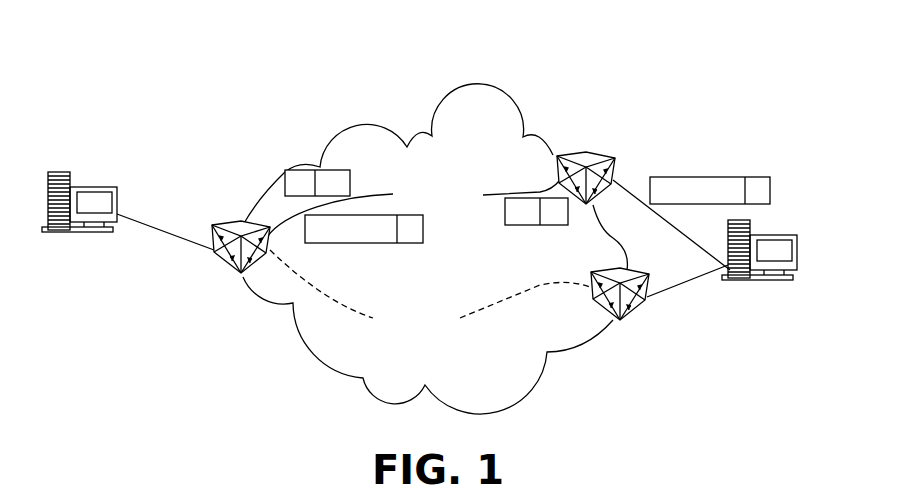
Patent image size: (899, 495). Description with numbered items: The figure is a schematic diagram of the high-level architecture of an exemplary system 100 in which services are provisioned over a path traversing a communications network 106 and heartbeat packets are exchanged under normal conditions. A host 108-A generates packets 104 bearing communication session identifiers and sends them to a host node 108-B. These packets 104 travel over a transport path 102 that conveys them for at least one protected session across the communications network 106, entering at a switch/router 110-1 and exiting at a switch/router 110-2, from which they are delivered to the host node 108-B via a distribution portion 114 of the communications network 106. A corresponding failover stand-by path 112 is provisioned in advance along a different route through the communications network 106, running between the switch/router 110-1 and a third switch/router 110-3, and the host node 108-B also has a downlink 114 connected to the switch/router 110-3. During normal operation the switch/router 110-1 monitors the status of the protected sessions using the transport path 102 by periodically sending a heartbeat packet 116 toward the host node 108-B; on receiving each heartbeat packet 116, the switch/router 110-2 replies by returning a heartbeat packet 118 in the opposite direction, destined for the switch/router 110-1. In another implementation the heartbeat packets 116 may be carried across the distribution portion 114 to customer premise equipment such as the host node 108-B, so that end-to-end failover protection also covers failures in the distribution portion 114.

The system 100 is at (672, 128).
The transport path 102 is at (533, 193).
The packets 104 is at (375, 233).
The communications network 106 is at (472, 105).
The host 108-A is at (90, 197).
The host node 108-B is at (782, 243).
The switch/router 110-1 is at (238, 223).
The switch/router 110-2 is at (597, 155).
The switch/router 110-3 is at (627, 322).
The failover stand-by path 112 is at (505, 305).
The distribution portion 114 is at (692, 295).
The heartbeat packet 116 is at (300, 178).
The heartbeat packet 118 is at (553, 217).